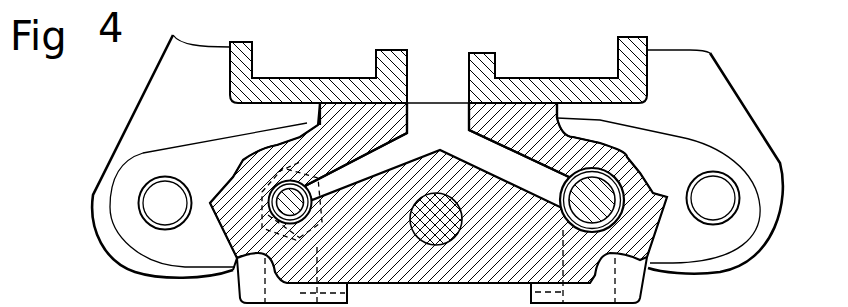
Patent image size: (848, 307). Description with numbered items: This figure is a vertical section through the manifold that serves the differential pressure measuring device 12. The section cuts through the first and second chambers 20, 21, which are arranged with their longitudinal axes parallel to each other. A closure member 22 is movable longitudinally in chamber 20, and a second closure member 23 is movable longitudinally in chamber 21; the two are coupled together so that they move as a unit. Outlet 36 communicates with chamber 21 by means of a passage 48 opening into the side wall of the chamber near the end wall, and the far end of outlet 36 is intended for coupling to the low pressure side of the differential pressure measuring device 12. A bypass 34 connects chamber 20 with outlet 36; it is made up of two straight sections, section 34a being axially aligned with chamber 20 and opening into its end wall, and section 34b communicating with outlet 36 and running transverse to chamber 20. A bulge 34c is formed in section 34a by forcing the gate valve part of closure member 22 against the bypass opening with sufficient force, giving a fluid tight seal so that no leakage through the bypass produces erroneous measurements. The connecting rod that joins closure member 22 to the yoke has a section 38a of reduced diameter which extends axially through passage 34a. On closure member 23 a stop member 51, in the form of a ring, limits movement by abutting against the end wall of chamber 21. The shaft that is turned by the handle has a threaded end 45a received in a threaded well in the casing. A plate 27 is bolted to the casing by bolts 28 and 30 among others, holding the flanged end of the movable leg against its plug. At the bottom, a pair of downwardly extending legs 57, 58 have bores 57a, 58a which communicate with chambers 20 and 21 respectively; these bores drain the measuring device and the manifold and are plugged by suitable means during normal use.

The differential pressure measuring device 12 is at (660, 33).
The first chamber 20 is at (250, 160).
The second chamber 21 is at (592, 162).
The closure member 22 is at (258, 205).
The second closure member 23 is at (585, 203).
The plate 27 is at (152, 96).
The bolt 28 is at (156, 192).
The bolt 30 is at (722, 185).
The bypass 34 is at (320, 202).
The bypass section 34a is at (306, 224).
The bypass section 34b is at (362, 152).
The bulge 34c is at (317, 242).
The outlet 36 is at (466, 104).
The reduced diameter section 38a is at (306, 181).
The threaded end 45a is at (433, 205).
The passage 48 is at (519, 140).
The stop member 51 is at (574, 185).
The leg 57 is at (246, 293).
The bore 57a is at (348, 293).
The leg 58 is at (632, 290).
The bore 58a is at (532, 293).